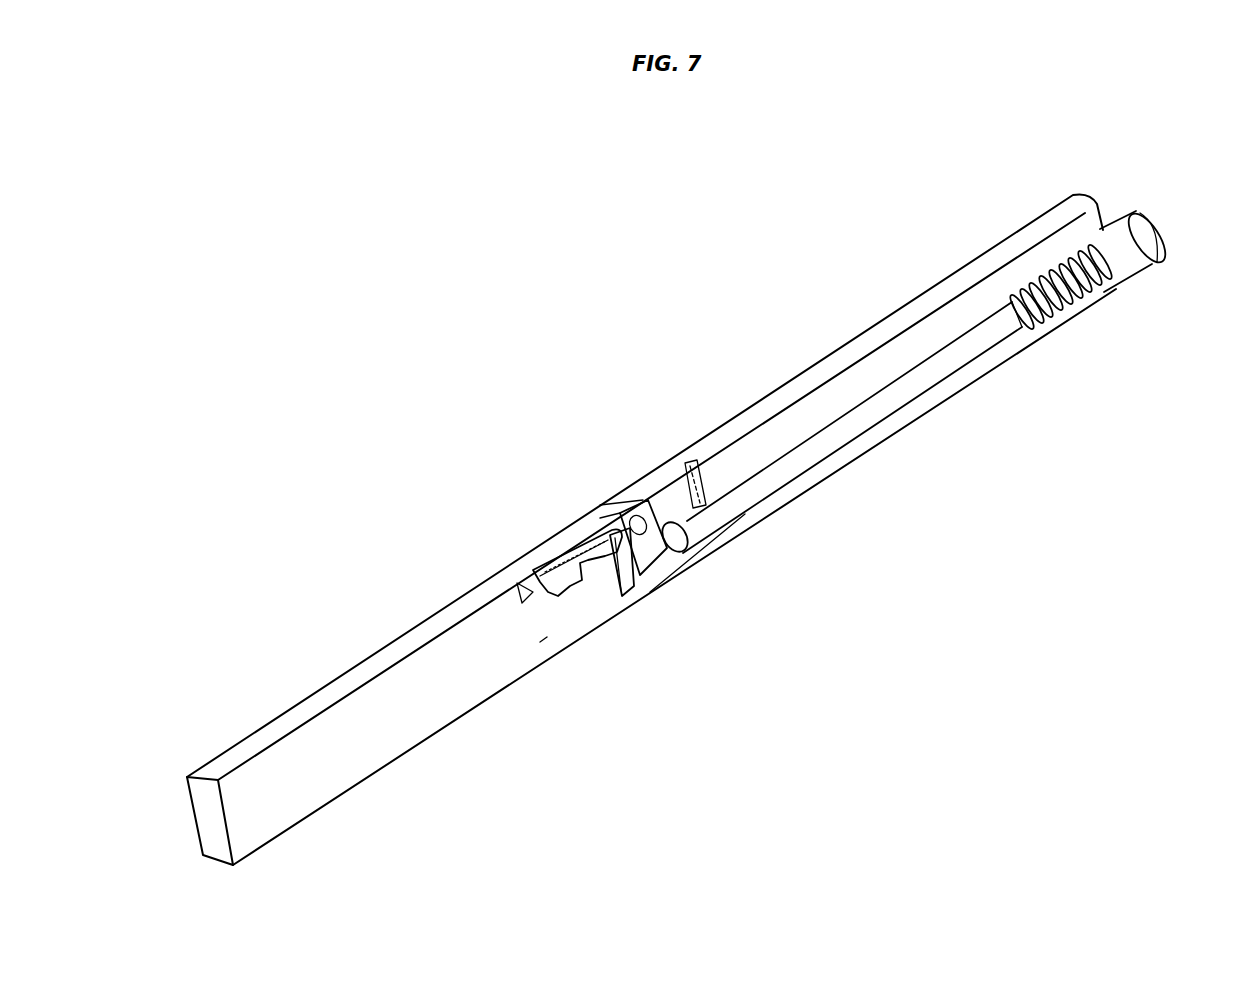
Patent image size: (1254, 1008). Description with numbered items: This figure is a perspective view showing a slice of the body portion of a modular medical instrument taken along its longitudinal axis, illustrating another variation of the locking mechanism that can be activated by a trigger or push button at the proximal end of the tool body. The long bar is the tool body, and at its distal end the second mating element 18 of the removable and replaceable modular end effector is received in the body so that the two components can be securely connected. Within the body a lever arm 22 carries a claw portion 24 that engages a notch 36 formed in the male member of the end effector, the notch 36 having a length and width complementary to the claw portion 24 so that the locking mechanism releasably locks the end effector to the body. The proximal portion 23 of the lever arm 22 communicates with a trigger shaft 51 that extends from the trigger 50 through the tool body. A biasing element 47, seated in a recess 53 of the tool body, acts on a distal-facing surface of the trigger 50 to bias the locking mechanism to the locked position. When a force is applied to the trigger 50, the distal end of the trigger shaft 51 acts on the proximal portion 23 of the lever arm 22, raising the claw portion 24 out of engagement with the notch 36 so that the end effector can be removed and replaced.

The second mating element 18 is at (547, 637).
The lever arm 22 is at (596, 548).
The proximal portion of lever arm 23 is at (663, 530).
The claw portion 24 is at (577, 585).
The notch 36 is at (527, 587).
The biasing element 47 is at (1067, 318).
The trigger 50 is at (1128, 242).
The trigger shaft 51 is at (766, 485).
The recess 53 is at (1020, 288).